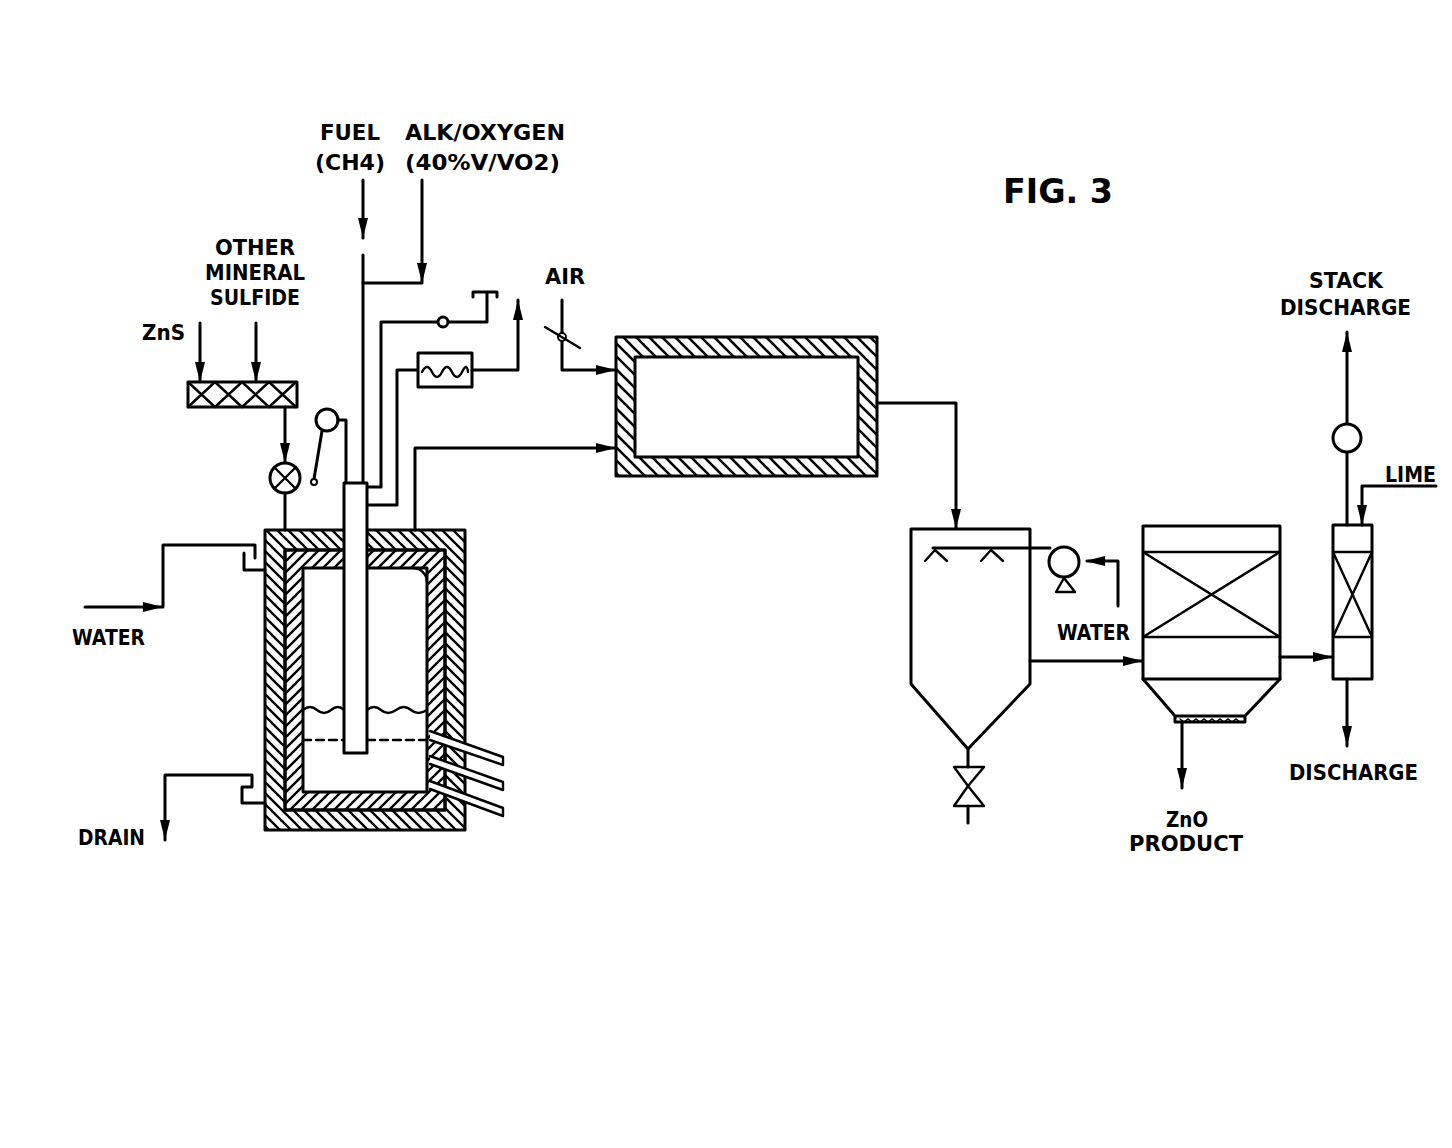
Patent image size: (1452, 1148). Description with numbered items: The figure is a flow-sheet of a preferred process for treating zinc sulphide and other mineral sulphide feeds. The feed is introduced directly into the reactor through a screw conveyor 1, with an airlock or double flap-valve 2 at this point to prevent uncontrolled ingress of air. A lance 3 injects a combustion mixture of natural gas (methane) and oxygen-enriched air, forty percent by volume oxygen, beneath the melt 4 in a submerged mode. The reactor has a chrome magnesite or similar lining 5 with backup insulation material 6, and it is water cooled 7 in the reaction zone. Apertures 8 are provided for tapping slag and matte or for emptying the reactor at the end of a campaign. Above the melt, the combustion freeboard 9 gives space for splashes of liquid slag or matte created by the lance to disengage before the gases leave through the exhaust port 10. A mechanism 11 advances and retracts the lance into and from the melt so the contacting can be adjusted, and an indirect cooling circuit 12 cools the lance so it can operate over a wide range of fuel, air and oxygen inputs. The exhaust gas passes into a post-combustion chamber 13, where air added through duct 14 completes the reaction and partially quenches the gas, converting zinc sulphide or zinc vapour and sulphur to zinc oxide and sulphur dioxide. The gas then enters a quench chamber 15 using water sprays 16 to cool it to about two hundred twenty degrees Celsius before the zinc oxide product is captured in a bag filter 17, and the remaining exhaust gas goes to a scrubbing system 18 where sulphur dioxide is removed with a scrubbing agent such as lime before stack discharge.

The screw conveyor 1 is at (210, 407).
The airlock or double flap-valve 2 is at (270, 477).
The lance 3 is at (340, 688).
The melt 4 is at (390, 773).
The lining 5 is at (435, 693).
The backup insulation material 6 is at (265, 665).
The water cooling 7 is at (250, 573).
The apertures 8 is at (505, 758).
The combustion freeboard 9 is at (405, 650).
The exhaust port 10 is at (450, 591).
The mechanism 11 is at (326, 409).
The indirect cooling circuit 12 is at (460, 387).
The post-combustion chamber 13 is at (750, 476).
The duct 14 is at (565, 327).
The quench chamber 15 is at (911, 613).
The water sprays 16 is at (972, 544).
The bag filter 17 is at (1175, 526).
The scrubbing system 18 is at (1372, 588).